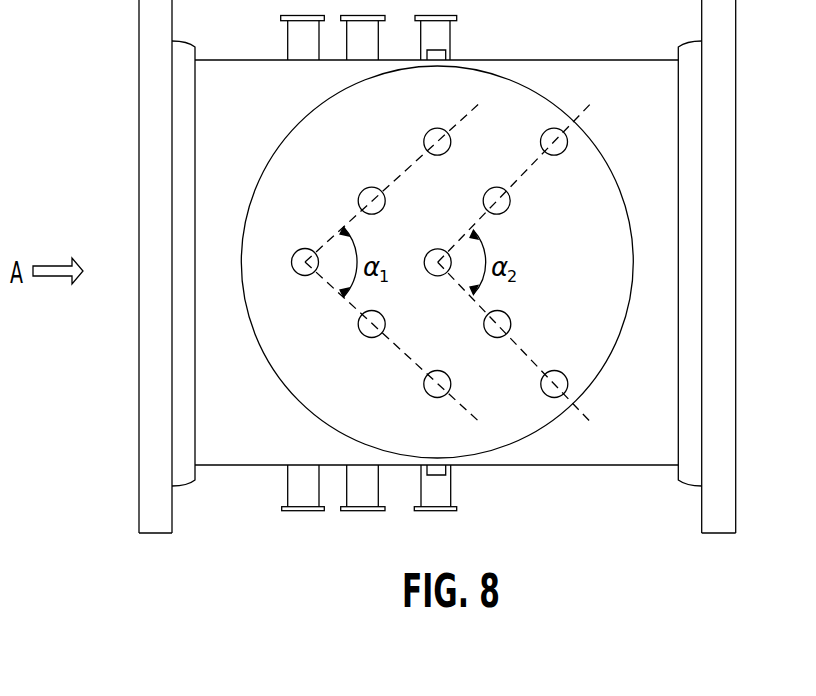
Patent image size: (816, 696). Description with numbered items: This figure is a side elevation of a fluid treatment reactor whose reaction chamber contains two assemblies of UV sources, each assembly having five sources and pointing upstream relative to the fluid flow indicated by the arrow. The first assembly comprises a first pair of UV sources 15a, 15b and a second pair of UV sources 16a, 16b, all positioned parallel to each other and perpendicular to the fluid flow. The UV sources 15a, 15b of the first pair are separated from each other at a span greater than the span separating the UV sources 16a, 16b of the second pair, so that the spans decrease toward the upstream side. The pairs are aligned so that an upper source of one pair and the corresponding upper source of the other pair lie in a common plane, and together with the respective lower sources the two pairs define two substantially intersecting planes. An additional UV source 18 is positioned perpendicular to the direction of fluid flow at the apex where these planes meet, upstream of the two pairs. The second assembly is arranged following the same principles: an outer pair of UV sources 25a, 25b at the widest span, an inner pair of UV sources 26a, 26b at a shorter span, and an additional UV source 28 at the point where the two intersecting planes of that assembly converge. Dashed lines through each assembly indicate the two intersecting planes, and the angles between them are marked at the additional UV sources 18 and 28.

The UV source of first pair 15a is at (437, 142).
The UV source of first pair 15b is at (437, 384).
The UV source of second pair 16a is at (372, 201).
The UV source of second pair 16b is at (372, 324).
The additional UV source 18 is at (305, 262).
The UV source of first pair of second assembly 25a is at (554, 142).
The UV source of first pair of second assembly 25b is at (554, 384).
The UV source of second pair of second assembly 26a is at (497, 201).
The UV source of second pair of second assembly 26b is at (497, 324).
The additional UV source of second assembly 28 is at (438, 262).